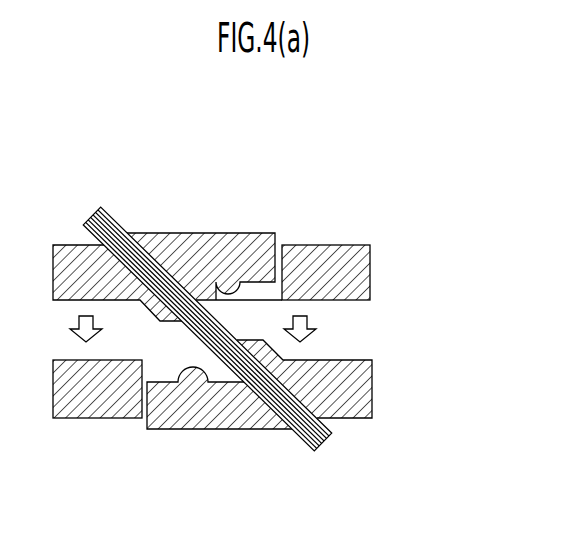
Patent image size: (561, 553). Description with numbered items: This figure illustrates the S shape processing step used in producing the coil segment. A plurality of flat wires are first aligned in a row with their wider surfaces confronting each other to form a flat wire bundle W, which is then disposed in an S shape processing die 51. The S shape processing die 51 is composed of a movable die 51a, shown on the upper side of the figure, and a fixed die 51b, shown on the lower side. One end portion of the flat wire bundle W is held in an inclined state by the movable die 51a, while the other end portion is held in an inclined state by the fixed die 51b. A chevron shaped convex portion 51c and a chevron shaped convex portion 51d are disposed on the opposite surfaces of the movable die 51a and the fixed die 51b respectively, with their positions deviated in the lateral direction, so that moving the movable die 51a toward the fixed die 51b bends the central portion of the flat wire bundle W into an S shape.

The flat wire bundle W is at (113, 208).
The S shape processing die 51 is at (323, 187).
The movable die 51a is at (374, 262).
The fixed die 51b is at (374, 382).
The chevron shaped convex portion 51c is at (244, 287).
The chevron shaped convex portion 51d is at (182, 388).